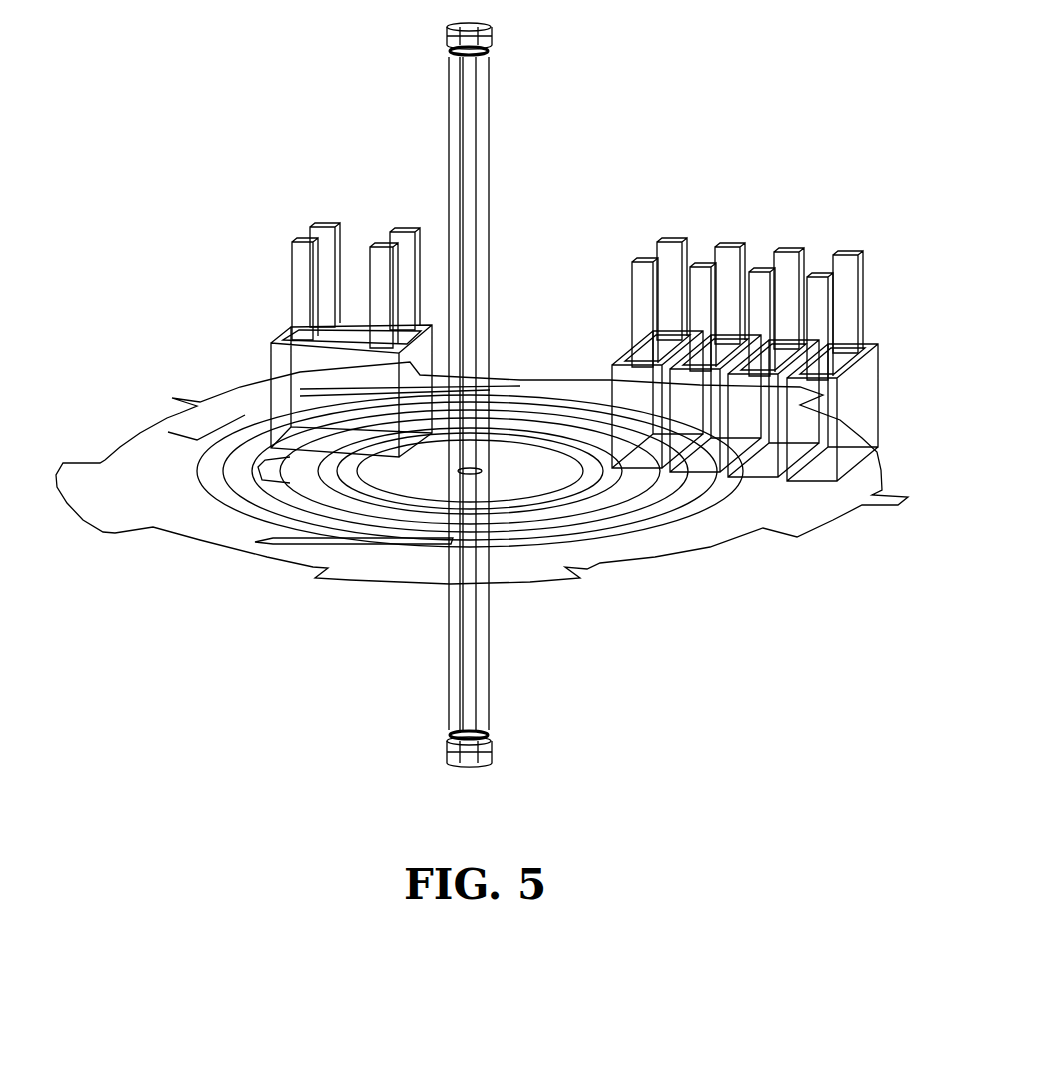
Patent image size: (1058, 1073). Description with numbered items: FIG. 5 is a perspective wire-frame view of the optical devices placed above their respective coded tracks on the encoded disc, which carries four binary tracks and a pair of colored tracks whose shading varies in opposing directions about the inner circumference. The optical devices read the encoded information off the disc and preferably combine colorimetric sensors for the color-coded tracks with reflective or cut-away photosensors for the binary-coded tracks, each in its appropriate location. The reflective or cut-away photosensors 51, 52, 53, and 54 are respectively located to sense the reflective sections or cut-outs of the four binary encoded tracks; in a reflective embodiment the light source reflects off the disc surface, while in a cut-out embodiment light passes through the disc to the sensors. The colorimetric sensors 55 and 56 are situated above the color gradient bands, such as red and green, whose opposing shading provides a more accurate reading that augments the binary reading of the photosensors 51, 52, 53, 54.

The reflective or cut-away photosensor 51 is at (853, 247).
The reflective or cut-away photosensor 52 is at (795, 237).
The reflective or cut-away photosensor 53 is at (737, 230).
The reflective or cut-away photosensor 54 is at (672, 232).
The colorimetric sensor 55 is at (292, 238).
The colorimetric sensor 56 is at (305, 215).